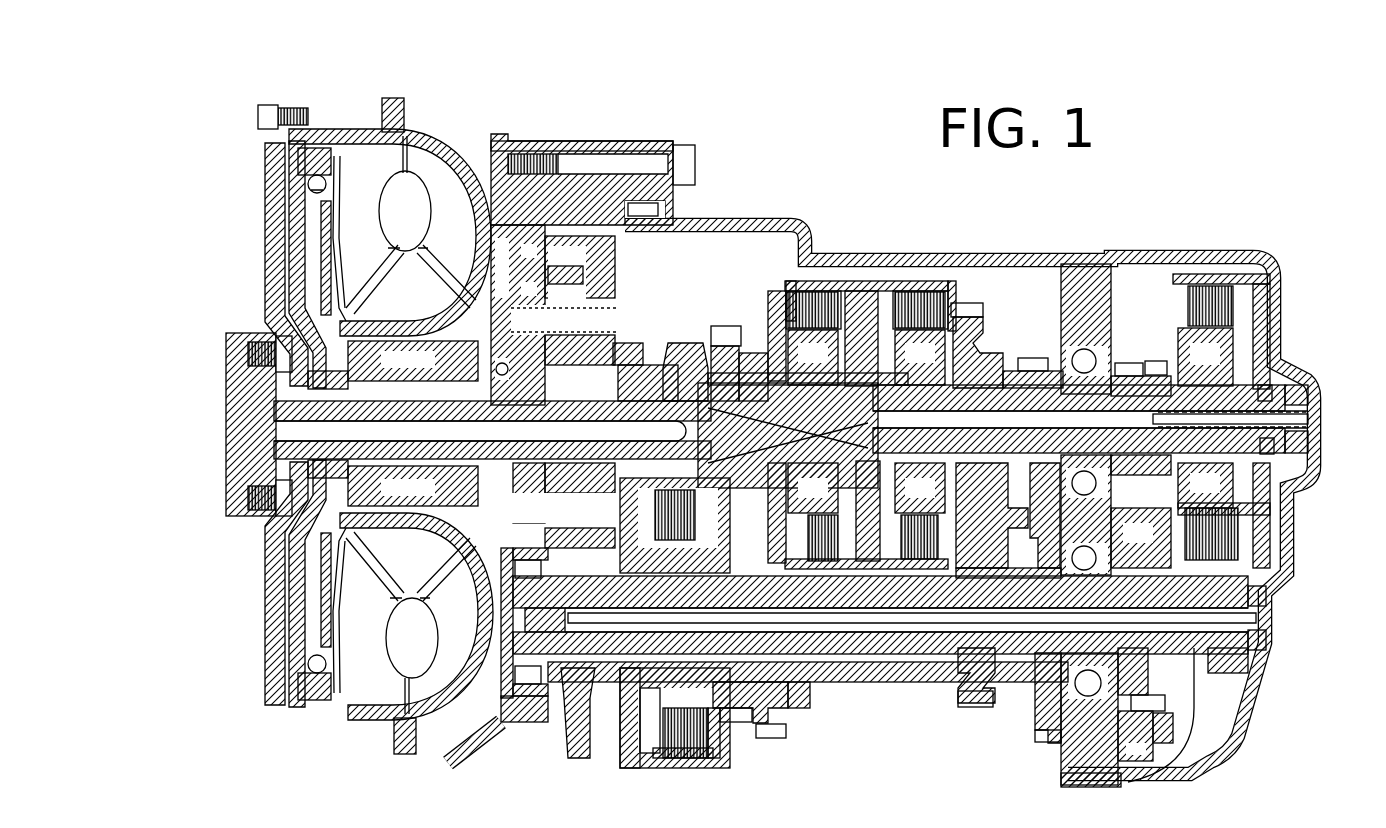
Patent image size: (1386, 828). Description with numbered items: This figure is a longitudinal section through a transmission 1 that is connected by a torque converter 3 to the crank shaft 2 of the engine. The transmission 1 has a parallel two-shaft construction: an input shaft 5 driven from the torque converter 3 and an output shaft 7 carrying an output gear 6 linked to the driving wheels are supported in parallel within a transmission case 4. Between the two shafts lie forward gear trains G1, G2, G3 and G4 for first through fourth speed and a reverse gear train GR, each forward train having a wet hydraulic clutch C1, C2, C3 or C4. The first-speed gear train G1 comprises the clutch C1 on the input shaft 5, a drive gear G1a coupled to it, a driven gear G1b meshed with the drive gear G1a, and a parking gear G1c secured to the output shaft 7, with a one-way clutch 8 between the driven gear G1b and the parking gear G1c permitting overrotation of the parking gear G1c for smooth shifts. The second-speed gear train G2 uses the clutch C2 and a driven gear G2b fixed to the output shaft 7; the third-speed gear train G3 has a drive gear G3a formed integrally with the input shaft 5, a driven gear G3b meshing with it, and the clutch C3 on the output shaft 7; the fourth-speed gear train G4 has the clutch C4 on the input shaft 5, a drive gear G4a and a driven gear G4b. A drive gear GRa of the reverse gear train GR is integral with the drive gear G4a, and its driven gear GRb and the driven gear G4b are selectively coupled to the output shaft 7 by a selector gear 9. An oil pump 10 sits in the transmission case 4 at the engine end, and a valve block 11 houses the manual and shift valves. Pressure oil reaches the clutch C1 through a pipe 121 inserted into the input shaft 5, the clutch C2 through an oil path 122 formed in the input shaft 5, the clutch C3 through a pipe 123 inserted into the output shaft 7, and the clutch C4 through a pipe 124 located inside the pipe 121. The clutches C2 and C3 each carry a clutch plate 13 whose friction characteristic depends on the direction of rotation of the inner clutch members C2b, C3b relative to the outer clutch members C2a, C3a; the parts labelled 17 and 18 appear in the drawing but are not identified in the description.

The transmission 1 is at (683, 128).
The crank shaft 2 is at (236, 327).
The torque converter 3 is at (430, 126).
The transmission case 4 is at (748, 222).
The input shaft 5 is at (655, 385).
The output gear 6 is at (565, 700).
The output shaft 7 is at (905, 648).
The one-way clutch 8 is at (1160, 696).
The selector gear 9 is at (1000, 558).
The oil pump 10 is at (558, 254).
The valve block 11 is at (632, 333).
The clutch plate 13 is at (790, 290).
The clutch piston 17 is at (770, 300).
The converter cover 18 is at (300, 245).
The pipe 121 is at (1268, 368).
The oil path 122 is at (690, 338).
The pipe 123 is at (1255, 612).
The pipe 124 is at (1300, 410).
The first-speed hydraulic clutch C1 is at (1205, 268).
The second-speed hydraulic clutch C2 is at (853, 269).
The outer clutch member C2a is at (820, 272).
The inner clutch member C2b is at (902, 275).
The third-speed hydraulic clutch C3 is at (712, 758).
The outer clutch member C3a is at (628, 742).
The inner clutch member C3b is at (650, 758).
The fourth-speed hydraulic clutch C4 is at (948, 271).
The first-speed gear train G1 is at (1127, 347).
The drive gear G1a is at (1148, 352).
The driven gear G1b is at (1125, 765).
The parking gear G1c is at (1190, 752).
The second-speed gear train G2 is at (772, 738).
The driven gear G2b is at (778, 725).
The third-speed gear train G3 is at (734, 727).
The drive gear G3a is at (718, 320).
The driven gear G3b is at (745, 708).
The fourth-speed gear train G4 is at (948, 696).
The drive gear G4a is at (962, 302).
The driven gear G4b is at (962, 700).
The reverse gear train GR is at (1037, 747).
The drive gear GRa is at (1020, 350).
The driven gear GRb is at (1030, 724).